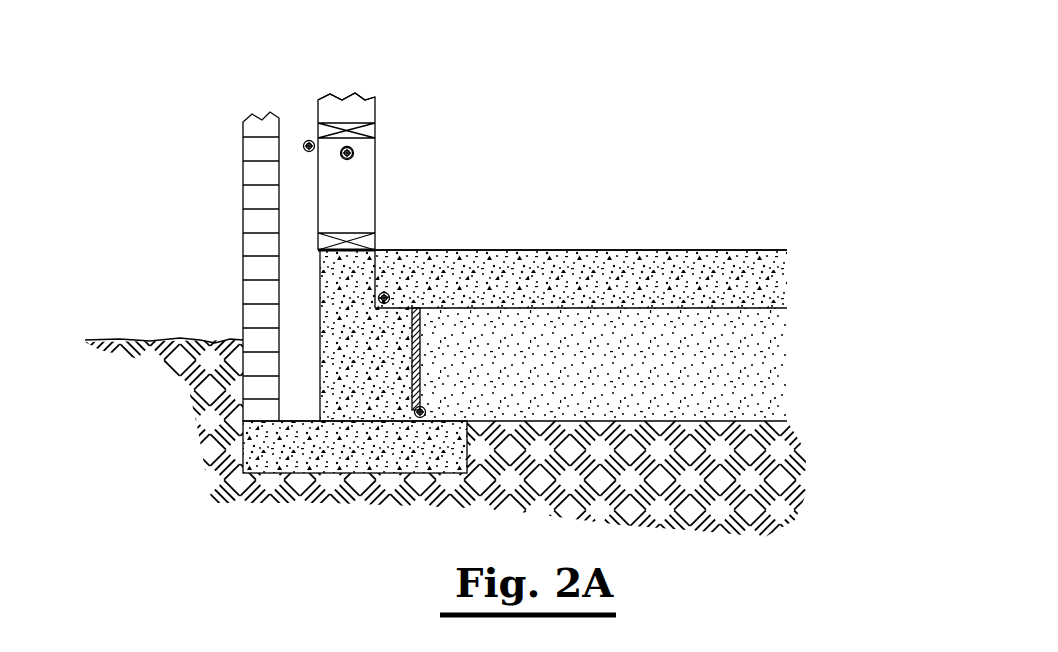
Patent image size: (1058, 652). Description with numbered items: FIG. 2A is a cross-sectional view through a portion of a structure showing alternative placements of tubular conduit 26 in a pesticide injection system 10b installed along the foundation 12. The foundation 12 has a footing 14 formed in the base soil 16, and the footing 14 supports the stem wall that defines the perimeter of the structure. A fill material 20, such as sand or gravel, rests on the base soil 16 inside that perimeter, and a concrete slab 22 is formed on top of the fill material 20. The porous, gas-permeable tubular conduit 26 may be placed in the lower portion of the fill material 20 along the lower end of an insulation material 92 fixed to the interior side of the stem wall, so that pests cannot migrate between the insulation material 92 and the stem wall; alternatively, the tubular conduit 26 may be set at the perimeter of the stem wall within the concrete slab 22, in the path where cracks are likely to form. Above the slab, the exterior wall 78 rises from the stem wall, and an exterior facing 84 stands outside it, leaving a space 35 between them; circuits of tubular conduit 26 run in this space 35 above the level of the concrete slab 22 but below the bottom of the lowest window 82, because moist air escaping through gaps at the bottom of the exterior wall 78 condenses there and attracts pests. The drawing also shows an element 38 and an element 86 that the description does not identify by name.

The pesticide injection system 10b is at (461, 159).
The foundation 12 is at (578, 250).
The footing 14 is at (310, 474).
The base soil 16 is at (118, 340).
The fill material 20 is at (638, 338).
The concrete slab 22 is at (712, 250).
The tubular conduit 26 is at (303, 147).
The space 35 is at (279, 378).
The expansion joint strip 38 is at (421, 352).
The exterior wall 78 is at (375, 110).
The window 82 is at (317, 107).
The exterior facing 84 is at (243, 248).
The cross bracing 86 is at (362, 140).
The insulation material 92 is at (340, 155).